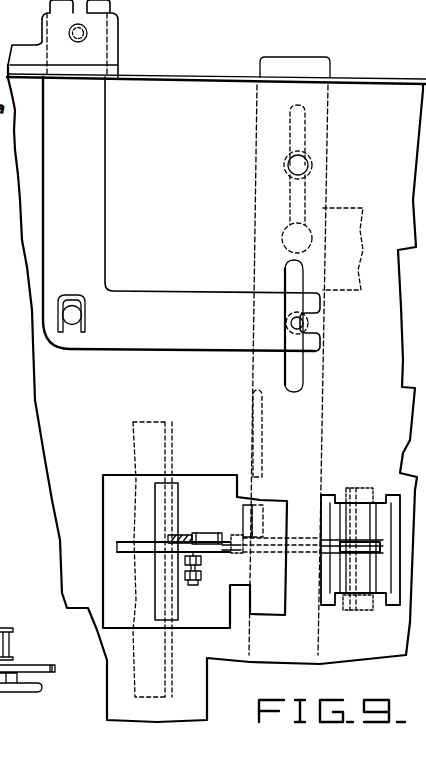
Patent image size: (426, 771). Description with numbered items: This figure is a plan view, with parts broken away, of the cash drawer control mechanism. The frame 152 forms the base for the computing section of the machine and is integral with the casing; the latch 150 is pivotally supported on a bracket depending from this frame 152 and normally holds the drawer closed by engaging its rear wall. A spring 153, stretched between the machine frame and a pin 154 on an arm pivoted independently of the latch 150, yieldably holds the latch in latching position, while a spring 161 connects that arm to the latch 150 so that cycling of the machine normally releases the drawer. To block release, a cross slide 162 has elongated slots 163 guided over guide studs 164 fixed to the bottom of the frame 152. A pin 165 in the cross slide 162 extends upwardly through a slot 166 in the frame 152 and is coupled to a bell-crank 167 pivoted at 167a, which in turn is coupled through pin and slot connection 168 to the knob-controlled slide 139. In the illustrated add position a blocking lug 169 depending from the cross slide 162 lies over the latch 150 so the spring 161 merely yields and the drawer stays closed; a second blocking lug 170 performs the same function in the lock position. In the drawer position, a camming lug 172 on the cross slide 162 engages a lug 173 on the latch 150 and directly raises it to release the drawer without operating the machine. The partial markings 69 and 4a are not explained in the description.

The slide 139 is at (24, 45).
The pin and slot connection 168 is at (87, 33).
The frame 152 is at (375, 103).
The guide studs 164 is at (301, 165).
The elongated slots 163 is at (288, 198).
The cross slide 162 is at (257, 218).
The bell-crank 167 is at (141, 297).
The pivot 167a is at (68, 328).
The slot 166 is at (301, 280).
The pin 165 is at (291, 323).
The camming lug 172 is at (252, 411).
The lug 173 is at (243, 509).
The blocking lug 169 is at (243, 533).
The latch 150 is at (120, 548).
The spring 161 is at (187, 561).
The spring 153 is at (187, 573).
The pin 154 is at (193, 586).
The second blocking lug 170 is at (195, 559).
The post 69 is at (17, 673).
The member (partial) 4a is at (8, 604).